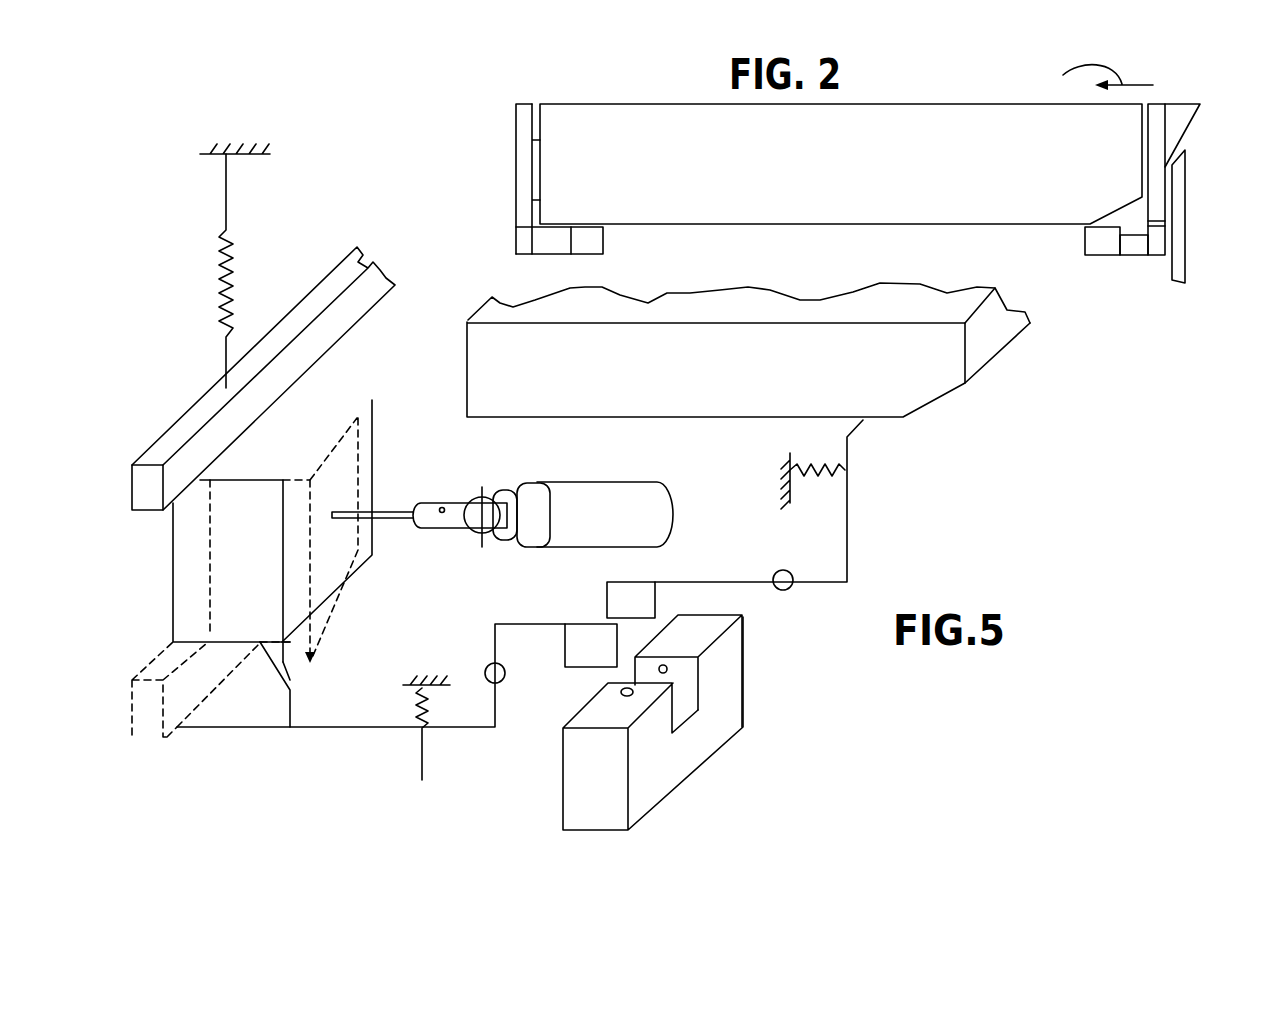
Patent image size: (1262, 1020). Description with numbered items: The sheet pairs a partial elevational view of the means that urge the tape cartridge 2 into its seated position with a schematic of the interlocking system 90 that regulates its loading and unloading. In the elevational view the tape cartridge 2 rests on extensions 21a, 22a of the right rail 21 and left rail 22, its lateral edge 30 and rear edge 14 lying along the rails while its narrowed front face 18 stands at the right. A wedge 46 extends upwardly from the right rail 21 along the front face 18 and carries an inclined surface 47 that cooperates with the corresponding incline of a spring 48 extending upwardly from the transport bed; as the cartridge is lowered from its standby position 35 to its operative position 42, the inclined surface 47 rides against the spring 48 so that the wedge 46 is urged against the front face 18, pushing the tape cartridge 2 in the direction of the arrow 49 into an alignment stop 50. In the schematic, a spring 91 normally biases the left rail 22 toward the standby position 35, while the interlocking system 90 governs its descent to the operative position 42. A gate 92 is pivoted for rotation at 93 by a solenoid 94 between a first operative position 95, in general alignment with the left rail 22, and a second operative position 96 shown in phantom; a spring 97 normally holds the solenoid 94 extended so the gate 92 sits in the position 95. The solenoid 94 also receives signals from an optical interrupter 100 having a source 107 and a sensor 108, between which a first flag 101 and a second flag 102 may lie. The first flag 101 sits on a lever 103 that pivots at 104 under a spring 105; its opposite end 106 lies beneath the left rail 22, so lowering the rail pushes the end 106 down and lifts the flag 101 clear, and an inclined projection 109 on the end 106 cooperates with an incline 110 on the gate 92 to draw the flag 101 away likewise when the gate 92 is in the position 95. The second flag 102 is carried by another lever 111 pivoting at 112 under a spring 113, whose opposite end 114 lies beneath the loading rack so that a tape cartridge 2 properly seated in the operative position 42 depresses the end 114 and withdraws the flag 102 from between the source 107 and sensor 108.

In FIG. 2, the tape cartridge 2 is at (873, 113).
In FIG. 5, the tape cartridge 2 is at (475, 358).
In FIG. 2, the edge of the tape cartridge 14 is at (540, 125).
In FIG. 5, the edge of the tape cartridge 14 is at (477, 313).
In FIG. 2, the front face 18 is at (1148, 132).
In FIG. 5, the front face 18 is at (993, 342).
In FIG. 2, the right rail 21 is at (1132, 247).
In FIG. 2, the extension of the right rail 21a is at (1098, 240).
In FIG. 2, the left rail 22 is at (555, 248).
In FIG. 5, the left rail 22 is at (132, 483).
In FIG. 2, the extension of the left rail 22a is at (603, 243).
In FIG. 2, the lateral edge 30 is at (746, 181).
In FIG. 5, the lateral edge 30 is at (623, 400).
In FIG. 5, the standby position 35 is at (154, 434).
In FIG. 5, the operative position 42 is at (172, 747).
In FIG. 2, the wedge 46 is at (1190, 118).
In FIG. 2, the inclined surface 47 is at (1190, 135).
In FIG. 2, the spring 48 is at (1180, 183).
In FIG. 2, the arrow 49 is at (1092, 77).
In FIG. 2, the alignment stop 50 is at (535, 175).
In FIG. 5, the interlocking system 90 is at (401, 598).
In FIG. 5, the spring 91 is at (218, 307).
In FIG. 5, the gate 92 is at (185, 572).
In FIG. 5, the pivot 93 is at (353, 400).
In FIG. 5, the solenoid 94 is at (658, 500).
In FIG. 5, the first operative position 95 is at (165, 545).
In FIG. 5, the second operative position 96 is at (343, 633).
In FIG. 5, the spring 97 is at (513, 493).
In FIG. 5, the optical interrupter 100 is at (720, 728).
In FIG. 5, the first flag 101 is at (565, 648).
In FIG. 5, the second flag 102 is at (645, 600).
In FIG. 5, the lever 103 is at (315, 730).
In FIG. 5, the pivot 104 is at (506, 680).
In FIG. 5, the spring 105 is at (417, 705).
In FIG. 5, the end of the lever 106 is at (277, 730).
In FIG. 5, the source 107 is at (643, 697).
In FIG. 5, the sensor 108 is at (667, 670).
In FIG. 5, the inclined projection 109 is at (287, 653).
In FIG. 5, the incline 110 is at (277, 675).
In FIG. 5, the lever 111 is at (847, 548).
In FIG. 5, the pivot 112 is at (785, 590).
In FIG. 5, the spring 113 is at (837, 467).
In FIG. 5, the end of the lever 114 is at (860, 430).